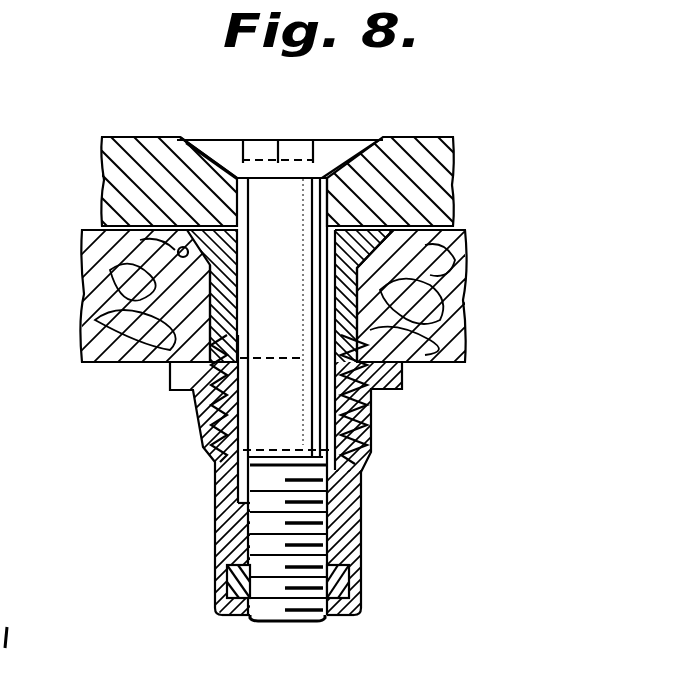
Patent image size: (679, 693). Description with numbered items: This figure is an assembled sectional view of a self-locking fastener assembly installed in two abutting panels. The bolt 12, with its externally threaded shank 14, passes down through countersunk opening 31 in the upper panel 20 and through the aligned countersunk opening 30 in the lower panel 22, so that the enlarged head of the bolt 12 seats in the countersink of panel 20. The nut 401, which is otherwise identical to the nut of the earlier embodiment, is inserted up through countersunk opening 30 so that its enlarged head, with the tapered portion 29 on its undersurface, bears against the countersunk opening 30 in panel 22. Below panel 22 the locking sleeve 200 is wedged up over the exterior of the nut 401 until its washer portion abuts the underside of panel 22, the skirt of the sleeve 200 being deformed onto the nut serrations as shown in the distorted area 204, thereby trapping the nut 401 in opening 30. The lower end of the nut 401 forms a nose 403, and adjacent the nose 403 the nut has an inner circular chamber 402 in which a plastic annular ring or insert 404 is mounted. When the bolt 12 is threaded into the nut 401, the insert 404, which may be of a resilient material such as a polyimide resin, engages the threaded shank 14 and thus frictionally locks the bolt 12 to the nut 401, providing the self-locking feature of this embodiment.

The bolt 12 is at (349, 128).
The externally threaded shank 14 is at (305, 500).
The panel 20 is at (137, 158).
The panel 22 is at (100, 257).
The tapered portion 29 is at (381, 247).
The countersunk opening 30 is at (180, 256).
The countersunk opening 31 is at (232, 136).
The locking sleeve 200 is at (172, 407).
The distorted area 204 is at (372, 410).
The nut 401 is at (190, 511).
The inner circular chamber 402 is at (343, 562).
The nose 403 is at (343, 616).
The plastic annular ring or insert 404 is at (226, 585).